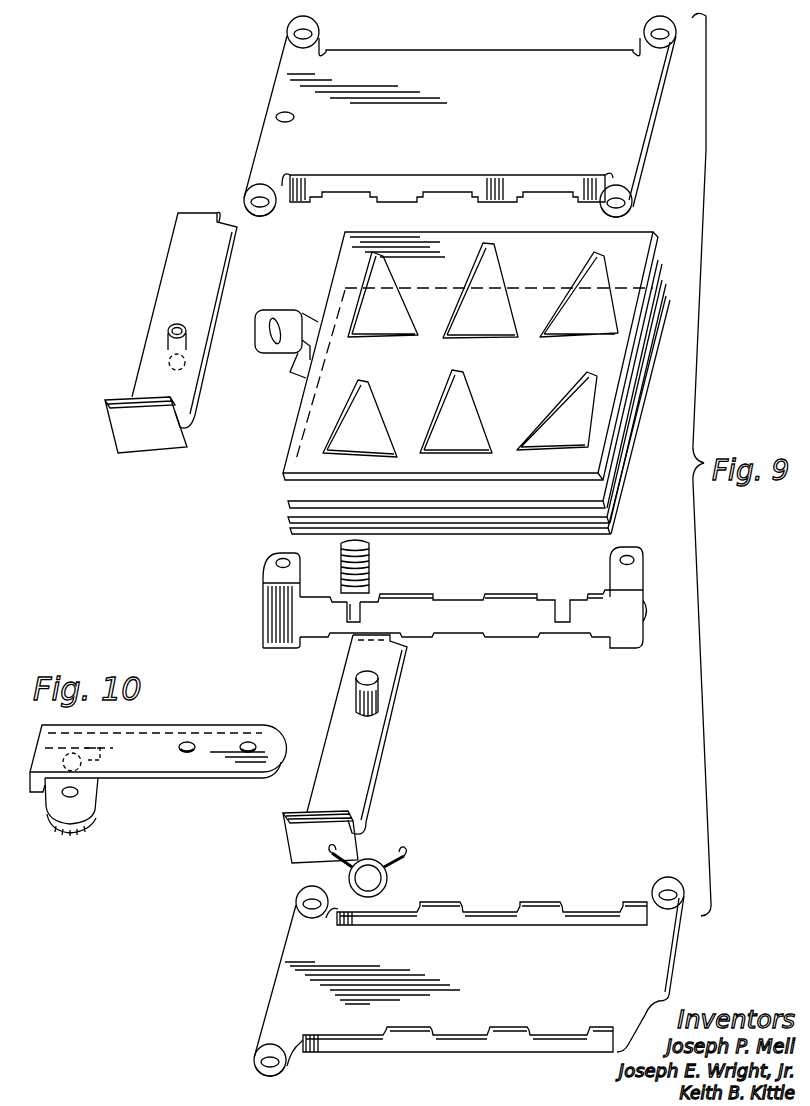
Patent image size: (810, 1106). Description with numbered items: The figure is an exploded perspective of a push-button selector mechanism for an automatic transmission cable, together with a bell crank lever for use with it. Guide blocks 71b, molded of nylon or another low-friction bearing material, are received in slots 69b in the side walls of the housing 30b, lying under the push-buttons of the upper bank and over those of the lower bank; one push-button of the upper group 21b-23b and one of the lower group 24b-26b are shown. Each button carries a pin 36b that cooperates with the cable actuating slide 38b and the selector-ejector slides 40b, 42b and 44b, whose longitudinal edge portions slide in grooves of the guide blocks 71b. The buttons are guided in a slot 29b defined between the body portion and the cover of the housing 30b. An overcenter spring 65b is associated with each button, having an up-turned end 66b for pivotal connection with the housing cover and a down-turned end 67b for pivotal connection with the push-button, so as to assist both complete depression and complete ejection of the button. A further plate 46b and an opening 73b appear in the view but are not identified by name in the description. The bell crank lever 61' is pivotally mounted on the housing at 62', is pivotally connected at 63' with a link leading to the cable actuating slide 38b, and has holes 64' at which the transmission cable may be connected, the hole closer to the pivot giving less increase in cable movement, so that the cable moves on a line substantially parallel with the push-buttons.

In FIG. 9, the upper bank push-buttons 21b-23b is at (158, 297).
In FIG. 9, the lower bank push-buttons 24b-26b is at (378, 751).
In FIG. 9, the slot 29b is at (450, 595).
In FIG. 9, the housing 30b is at (513, 592).
In FIG. 9, the pin 36b is at (190, 366).
In FIG. 9, the cable actuating slide 38b is at (633, 231).
In FIG. 9, the selector-ejector slide 40b is at (650, 276).
In FIG. 9, the selector-ejector slide 42b is at (652, 300).
In FIG. 9, the selector-ejector slide 44b is at (647, 340).
In FIG. 9, the base plate 46b is at (277, 985).
In FIG. 9, the spring 65b is at (393, 890).
In FIG. 9, the up-turned end 66b is at (333, 857).
In FIG. 9, the down-turned end 67b is at (402, 857).
In FIG. 9, the slots 69b is at (362, 620).
In FIG. 9, the guide blocks 71b is at (371, 566).
In FIG. 9, the cover plate hole 73b is at (297, 117).
In FIG. 10, the bell crank lever 61' is at (158, 767).
In FIG. 10, the pivot 62' is at (105, 753).
In FIG. 10, the pivotal connection 63' is at (64, 812).
In FIG. 10, the hole 64' is at (217, 722).